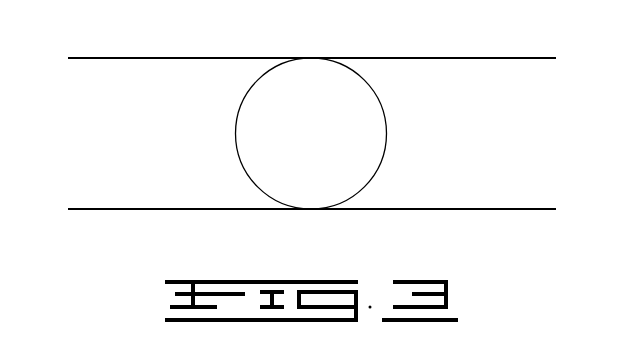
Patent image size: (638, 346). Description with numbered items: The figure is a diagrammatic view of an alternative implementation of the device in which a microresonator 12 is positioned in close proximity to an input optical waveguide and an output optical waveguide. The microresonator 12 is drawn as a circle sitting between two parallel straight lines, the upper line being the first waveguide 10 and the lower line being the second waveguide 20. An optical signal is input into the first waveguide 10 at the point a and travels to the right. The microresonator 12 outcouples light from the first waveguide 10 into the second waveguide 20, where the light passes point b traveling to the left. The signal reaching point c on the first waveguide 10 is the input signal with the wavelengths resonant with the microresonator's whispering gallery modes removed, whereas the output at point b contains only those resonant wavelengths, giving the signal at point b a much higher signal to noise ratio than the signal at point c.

The first waveguide 10 is at (220, 58).
The microresonator 12 is at (236, 104).
The second waveguide 20 is at (150, 210).
The point a is at (78, 59).
The point b is at (87, 209).
The point c is at (536, 58).